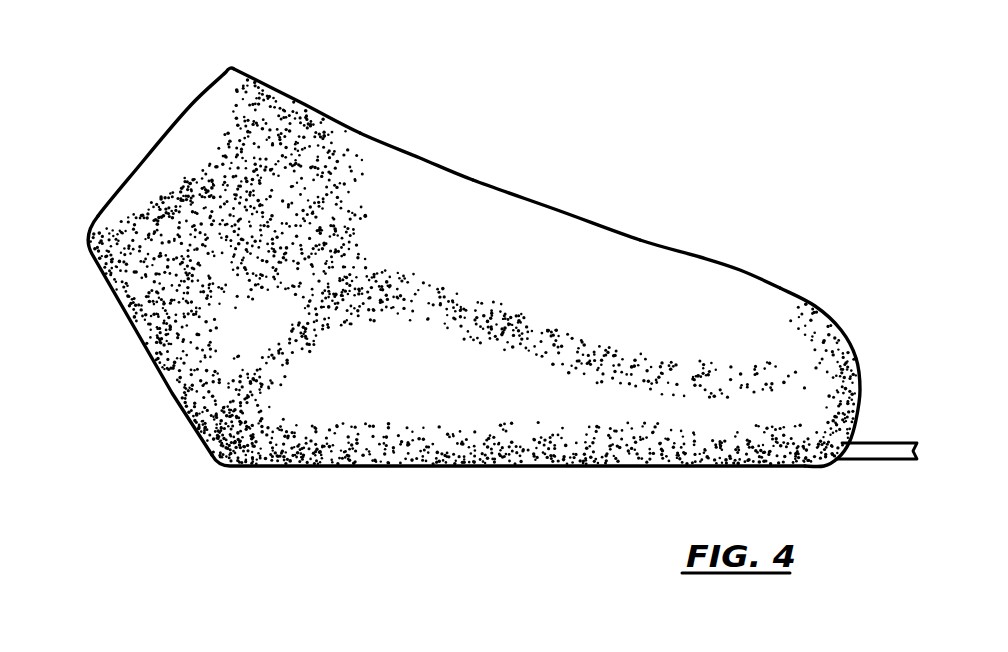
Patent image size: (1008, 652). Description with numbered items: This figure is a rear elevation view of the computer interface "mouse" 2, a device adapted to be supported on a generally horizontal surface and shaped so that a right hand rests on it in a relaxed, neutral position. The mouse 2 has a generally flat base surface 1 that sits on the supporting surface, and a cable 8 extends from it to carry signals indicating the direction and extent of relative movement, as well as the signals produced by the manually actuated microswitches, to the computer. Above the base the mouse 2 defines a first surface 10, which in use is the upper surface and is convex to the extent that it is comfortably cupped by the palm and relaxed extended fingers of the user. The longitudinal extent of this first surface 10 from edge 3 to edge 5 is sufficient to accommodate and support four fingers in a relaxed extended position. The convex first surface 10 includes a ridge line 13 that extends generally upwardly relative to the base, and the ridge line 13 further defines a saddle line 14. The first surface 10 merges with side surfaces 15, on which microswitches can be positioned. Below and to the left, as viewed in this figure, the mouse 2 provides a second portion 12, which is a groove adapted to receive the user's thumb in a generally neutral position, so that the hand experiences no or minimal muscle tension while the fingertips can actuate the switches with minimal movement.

The base surface 1 is at (425, 467).
The mouse 2 is at (267, 100).
The edge 3 is at (229, 64).
The edge 5 is at (803, 296).
The cable 8 is at (858, 450).
The first surface 10 is at (547, 230).
The second portion 12 is at (223, 300).
The ridge line 13 is at (393, 146).
The saddle line 14 is at (473, 180).
The side surfaces 15 is at (497, 398).